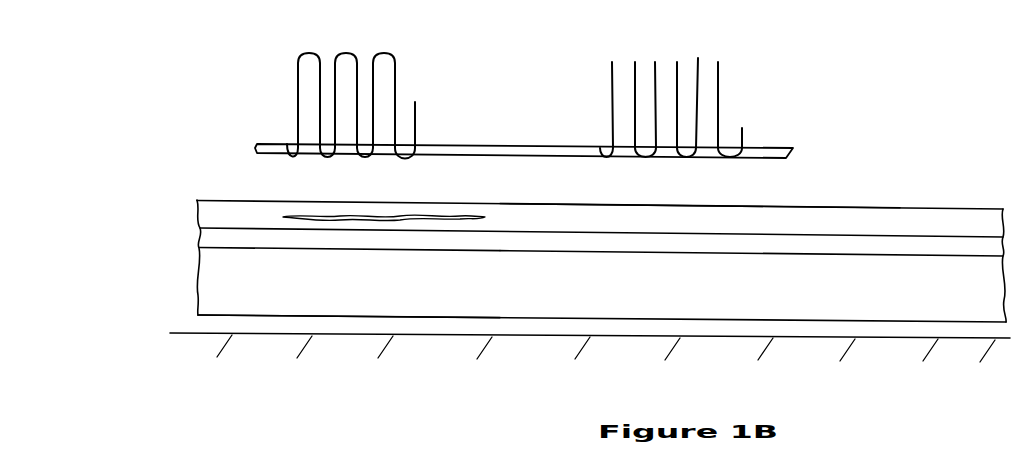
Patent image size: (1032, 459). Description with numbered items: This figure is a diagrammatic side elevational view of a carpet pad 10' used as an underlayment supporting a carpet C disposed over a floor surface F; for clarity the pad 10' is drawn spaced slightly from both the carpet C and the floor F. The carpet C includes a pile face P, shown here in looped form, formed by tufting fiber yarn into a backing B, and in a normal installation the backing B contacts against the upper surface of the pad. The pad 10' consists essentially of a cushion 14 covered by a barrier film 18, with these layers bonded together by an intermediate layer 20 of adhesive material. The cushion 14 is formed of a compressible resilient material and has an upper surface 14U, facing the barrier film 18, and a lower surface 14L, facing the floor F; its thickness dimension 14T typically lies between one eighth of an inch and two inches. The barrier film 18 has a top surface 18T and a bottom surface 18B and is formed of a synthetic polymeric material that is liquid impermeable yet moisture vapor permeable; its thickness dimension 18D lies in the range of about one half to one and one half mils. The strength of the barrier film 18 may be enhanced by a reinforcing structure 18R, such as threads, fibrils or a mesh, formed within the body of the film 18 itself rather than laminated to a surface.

The carpet pad 10' is at (556, 261).
The cushion 14 is at (184, 294).
The upper surface 14U is at (228, 228).
The lower surface 14L is at (262, 317).
The thickness dimension 14T is at (347, 249).
The barrier film 18 is at (188, 218).
The top surface 18T is at (713, 206).
The bottom surface 18B is at (850, 240).
The reinforcing structure 18R is at (432, 215).
The thickness dimension 18D is at (550, 231).
The adhesive layer 20 is at (192, 239).
The pile face P is at (292, 102).
The backing B is at (258, 150).
The carpet C is at (826, 112).
The floor surface F is at (531, 372).